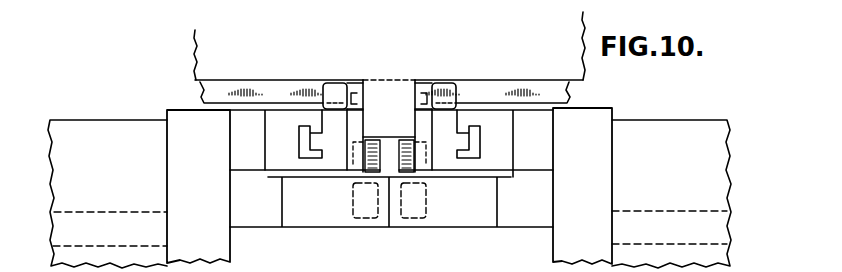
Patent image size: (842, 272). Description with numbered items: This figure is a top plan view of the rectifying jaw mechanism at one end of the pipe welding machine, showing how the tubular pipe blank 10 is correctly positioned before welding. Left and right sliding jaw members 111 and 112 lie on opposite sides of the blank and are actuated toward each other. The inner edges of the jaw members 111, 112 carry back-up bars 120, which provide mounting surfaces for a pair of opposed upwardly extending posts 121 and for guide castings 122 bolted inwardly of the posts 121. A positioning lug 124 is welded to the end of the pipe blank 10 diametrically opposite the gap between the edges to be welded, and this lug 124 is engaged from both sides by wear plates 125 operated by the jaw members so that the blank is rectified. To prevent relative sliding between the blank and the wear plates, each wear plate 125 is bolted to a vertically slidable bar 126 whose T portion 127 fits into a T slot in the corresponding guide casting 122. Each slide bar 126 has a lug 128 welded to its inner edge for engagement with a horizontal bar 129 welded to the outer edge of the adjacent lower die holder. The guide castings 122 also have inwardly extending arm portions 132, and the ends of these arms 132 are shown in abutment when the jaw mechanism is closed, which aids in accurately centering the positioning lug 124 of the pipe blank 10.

The tubular pipe blank 10 is at (195, 54).
The left sliding jaw member 111 is at (120, 126).
The right sliding jaw member 112 is at (655, 126).
The back-up bar 120 is at (224, 243).
The post 121 is at (272, 209).
The guide casting 122 is at (280, 118).
The positioning lug 124 is at (385, 87).
The wear plate 125 is at (425, 128).
The vertically slidable bar 126 is at (333, 160).
The T portion 127 is at (306, 144).
The lug 128 is at (334, 88).
The horizontal bar 129 is at (240, 91).
The arm portion 132 is at (425, 229).